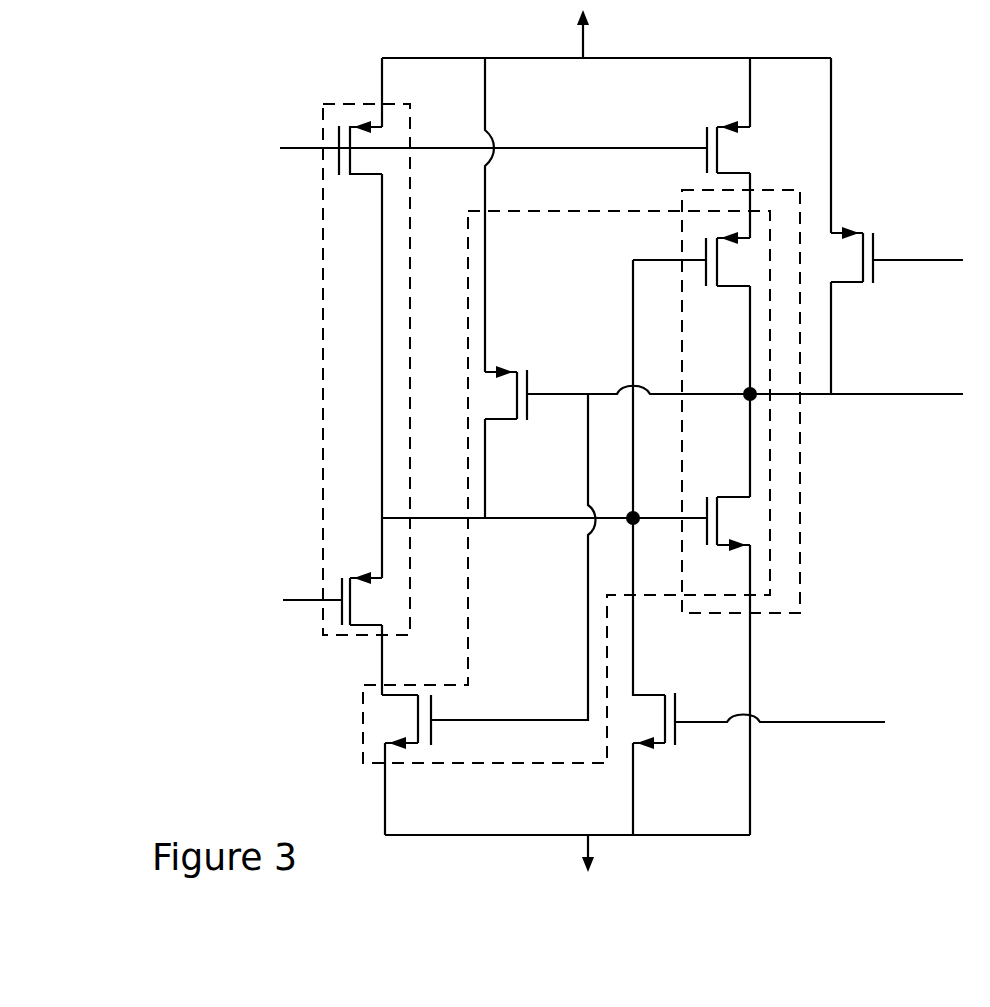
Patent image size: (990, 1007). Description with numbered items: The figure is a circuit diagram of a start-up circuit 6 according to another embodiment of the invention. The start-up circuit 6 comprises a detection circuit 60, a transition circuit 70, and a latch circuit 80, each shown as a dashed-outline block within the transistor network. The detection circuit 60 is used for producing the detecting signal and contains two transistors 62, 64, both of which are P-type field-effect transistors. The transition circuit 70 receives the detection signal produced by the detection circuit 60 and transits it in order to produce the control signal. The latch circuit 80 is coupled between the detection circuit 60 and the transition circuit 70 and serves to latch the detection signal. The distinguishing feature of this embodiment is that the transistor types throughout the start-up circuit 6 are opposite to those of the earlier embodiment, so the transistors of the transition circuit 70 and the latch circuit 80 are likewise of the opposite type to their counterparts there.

The start-up circuit 6 is at (970, 112).
The detection circuit 60 is at (378, 103).
The transistor 62 is at (350, 165).
The transistor 64 is at (352, 617).
The transition circuit 70 is at (790, 200).
The latch circuit 80 is at (548, 210).